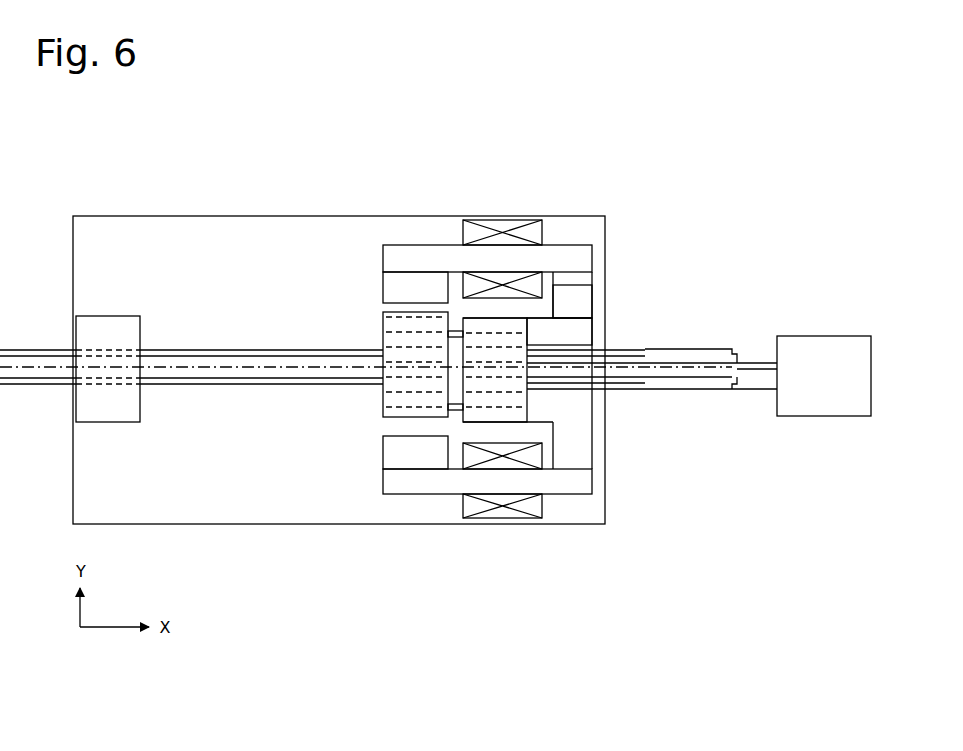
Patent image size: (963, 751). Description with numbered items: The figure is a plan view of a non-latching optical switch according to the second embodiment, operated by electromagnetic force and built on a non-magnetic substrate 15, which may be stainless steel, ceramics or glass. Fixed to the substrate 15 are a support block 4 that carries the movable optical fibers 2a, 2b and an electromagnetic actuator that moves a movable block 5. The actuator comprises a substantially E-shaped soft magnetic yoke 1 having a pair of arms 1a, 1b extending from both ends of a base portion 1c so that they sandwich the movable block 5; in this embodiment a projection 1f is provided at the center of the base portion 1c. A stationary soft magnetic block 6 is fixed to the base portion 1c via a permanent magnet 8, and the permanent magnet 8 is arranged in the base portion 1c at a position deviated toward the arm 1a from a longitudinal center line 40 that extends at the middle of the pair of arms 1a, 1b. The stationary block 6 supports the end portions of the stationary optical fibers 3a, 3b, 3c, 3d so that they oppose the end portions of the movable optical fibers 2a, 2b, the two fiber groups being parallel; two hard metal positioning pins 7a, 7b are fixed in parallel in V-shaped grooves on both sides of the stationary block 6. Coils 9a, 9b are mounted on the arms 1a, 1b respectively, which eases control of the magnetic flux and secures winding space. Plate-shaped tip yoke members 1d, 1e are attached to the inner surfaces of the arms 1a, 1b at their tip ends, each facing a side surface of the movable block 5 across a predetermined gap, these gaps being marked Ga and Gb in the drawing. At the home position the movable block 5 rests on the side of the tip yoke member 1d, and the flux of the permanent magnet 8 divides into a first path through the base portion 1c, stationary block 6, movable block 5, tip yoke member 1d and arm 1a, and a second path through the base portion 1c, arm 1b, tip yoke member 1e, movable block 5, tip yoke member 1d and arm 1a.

The soft magnetic yoke 1 is at (592, 241).
The arm 1a is at (420, 257).
The arm 1b is at (448, 486).
The base portion 1c is at (575, 415).
The tip yoke member 1d is at (390, 287).
The tip yoke member 1e is at (410, 465).
The projection 1f is at (537, 416).
The movable optical fiber 2a is at (190, 349).
The movable optical fiber 2b is at (190, 385).
The stationary optical fiber 3a is at (640, 346).
The stationary optical fiber 3b is at (645, 353).
The stationary optical fiber 3c is at (645, 384).
The stationary optical fiber 3d is at (640, 392).
The support block 4 is at (88, 335).
The movable block 5 is at (385, 368).
The stationary block 6 is at (507, 416).
The positioning pin 7a is at (450, 330).
The positioning pin 7b is at (457, 412).
The permanent magnet 8 is at (587, 298).
The coil 9a is at (507, 225).
The coil 9b is at (515, 519).
The non-magnetic substrate 15 is at (110, 232).
The longitudinal center line 40 is at (753, 362).
The gap Ga is at (385, 307).
The gap Gb is at (392, 426).